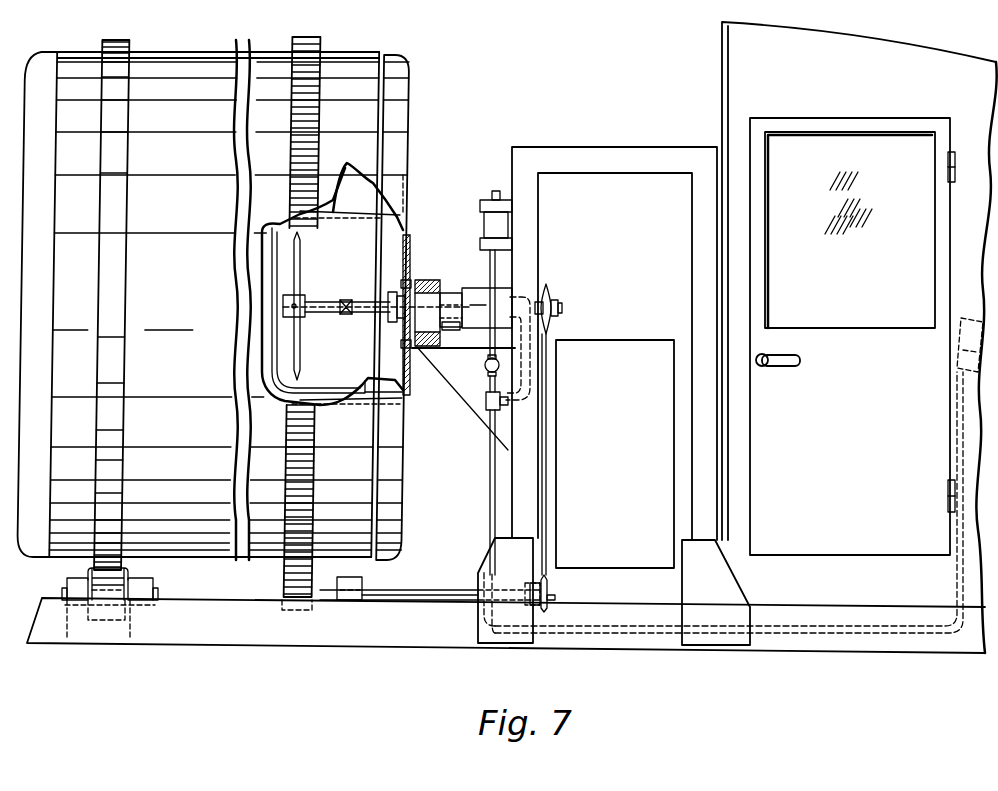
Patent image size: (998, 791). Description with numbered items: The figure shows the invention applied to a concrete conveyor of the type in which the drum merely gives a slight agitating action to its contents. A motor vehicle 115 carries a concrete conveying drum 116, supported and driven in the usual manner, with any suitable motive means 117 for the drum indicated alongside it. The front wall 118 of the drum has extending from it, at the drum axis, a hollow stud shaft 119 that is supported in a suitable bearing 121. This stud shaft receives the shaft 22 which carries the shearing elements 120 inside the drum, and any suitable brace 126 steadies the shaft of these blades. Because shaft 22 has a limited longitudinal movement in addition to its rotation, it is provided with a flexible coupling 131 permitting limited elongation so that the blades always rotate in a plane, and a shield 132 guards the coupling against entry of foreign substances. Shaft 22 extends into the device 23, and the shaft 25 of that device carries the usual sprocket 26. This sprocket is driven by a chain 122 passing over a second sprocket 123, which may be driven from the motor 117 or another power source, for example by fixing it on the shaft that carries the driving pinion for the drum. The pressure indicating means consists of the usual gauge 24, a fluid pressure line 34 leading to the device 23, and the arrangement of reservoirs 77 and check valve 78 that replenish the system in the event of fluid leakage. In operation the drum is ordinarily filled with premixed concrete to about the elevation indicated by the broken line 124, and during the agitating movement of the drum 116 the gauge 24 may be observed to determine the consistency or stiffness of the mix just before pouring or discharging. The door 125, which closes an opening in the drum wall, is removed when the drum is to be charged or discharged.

The shaft 22 is at (392, 299).
The device 23 is at (481, 291).
The gauge 24 is at (958, 348).
The shaft 25 is at (543, 288).
The sprocket 26 is at (553, 300).
The fluid pressure line 34 is at (530, 393).
The reservoirs 77 is at (487, 218).
The check valve 78 is at (484, 365).
The motor vehicle 115 is at (805, 597).
The concrete conveying drum 116 is at (183, 558).
The motive means 117 is at (557, 505).
The front wall 118 is at (410, 192).
The stud shaft 119 is at (422, 280).
The shearing elements 120 is at (305, 288).
The bearing 121 is at (425, 345).
The chain 122 is at (540, 478).
The second sprocket 123 is at (544, 603).
The broken line 124 is at (375, 188).
The door 125 is at (265, 48).
The brace 126 is at (277, 345).
The flexible coupling 131 is at (447, 330).
The shield 132 is at (447, 292).